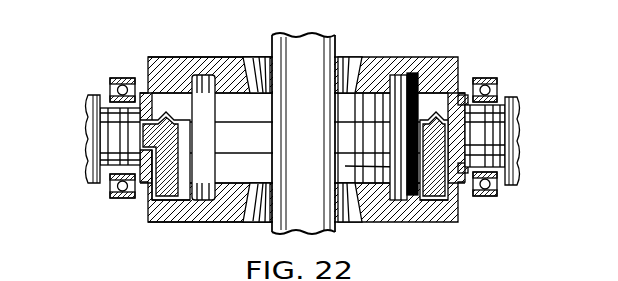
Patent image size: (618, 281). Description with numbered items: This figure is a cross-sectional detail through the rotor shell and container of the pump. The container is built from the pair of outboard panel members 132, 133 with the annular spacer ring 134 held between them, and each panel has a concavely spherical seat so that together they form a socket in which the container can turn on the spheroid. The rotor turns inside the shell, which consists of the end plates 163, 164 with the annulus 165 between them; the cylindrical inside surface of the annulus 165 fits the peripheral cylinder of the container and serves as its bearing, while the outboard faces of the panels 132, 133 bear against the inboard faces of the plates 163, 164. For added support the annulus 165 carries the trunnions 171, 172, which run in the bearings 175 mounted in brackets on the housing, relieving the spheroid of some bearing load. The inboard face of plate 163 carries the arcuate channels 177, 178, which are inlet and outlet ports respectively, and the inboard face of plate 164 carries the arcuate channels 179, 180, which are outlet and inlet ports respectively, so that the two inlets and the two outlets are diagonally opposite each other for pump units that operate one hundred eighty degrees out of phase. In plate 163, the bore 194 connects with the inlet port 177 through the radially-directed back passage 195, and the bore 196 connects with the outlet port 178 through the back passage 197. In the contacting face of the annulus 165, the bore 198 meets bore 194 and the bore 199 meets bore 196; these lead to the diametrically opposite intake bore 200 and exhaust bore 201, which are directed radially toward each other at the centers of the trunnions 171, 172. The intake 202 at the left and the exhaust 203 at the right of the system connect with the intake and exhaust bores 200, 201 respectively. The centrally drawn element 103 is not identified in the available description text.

The conduit 103 is at (300, 58).
The outboard panel member 132 is at (265, 163).
The outboard panel member 133 is at (432, 62).
The annular spacer ring 134 is at (326, 130).
The end plate 163 is at (184, 212).
The end plate 164 is at (204, 74).
The annulus 165 is at (143, 180).
The trunnion 171 is at (103, 190).
The trunnion 172 is at (520, 158).
The bearings 175 is at (120, 78).
The arcuate channel 177 is at (215, 197).
The arcuate channel 178 is at (398, 208).
The arcuate channel 179 is at (252, 60).
The arcuate channel 180 is at (403, 72).
The bore 194 is at (153, 208).
The radially-directed back passage 195 is at (185, 200).
The bore 196 is at (460, 186).
The radially-directed back passage 197 is at (437, 208).
The bore 198 is at (178, 146).
The bore 199 is at (356, 165).
The intake bore 200 is at (162, 57).
The exhaust bore 201 is at (452, 165).
The intake 202 is at (86, 166).
The exhaust 203 is at (510, 133).